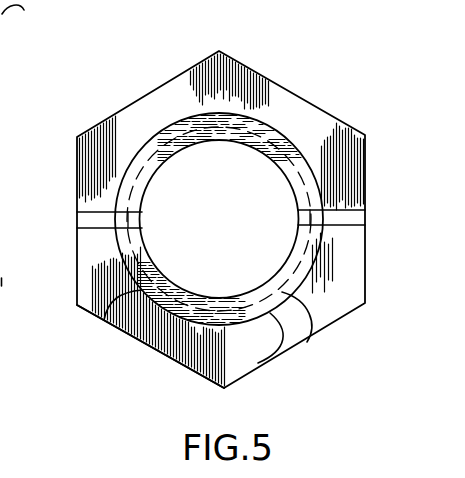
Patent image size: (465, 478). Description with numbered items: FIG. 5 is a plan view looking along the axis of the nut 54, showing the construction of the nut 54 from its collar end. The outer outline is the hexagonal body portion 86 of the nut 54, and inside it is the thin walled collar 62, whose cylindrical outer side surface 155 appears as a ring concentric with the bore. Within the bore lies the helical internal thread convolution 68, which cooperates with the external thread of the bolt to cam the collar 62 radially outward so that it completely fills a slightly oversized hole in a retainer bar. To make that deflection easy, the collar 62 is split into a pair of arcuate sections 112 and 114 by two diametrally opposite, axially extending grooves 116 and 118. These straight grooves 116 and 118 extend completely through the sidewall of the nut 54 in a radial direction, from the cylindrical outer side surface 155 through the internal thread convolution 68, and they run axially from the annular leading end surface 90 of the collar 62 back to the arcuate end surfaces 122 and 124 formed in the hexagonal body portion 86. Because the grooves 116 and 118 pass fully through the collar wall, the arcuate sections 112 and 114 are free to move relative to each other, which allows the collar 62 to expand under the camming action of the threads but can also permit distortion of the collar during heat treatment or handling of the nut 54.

The nut 54 is at (341, 101).
The thin walled collar 62 is at (166, 124).
The arcuate section 112 is at (263, 133).
The helical internal thread convolution 68 is at (174, 140).
The arcuate end surface 122 is at (84, 217).
The arcuate end surface 124 is at (356, 214).
The axially extending groove 116 is at (133, 222).
The axially extending groove 118 is at (300, 214).
The cylindrical outer side surface 155 is at (104, 320).
The hexagonal body portion 86 is at (149, 351).
The leading end surface 90 is at (307, 339).
The arcuate section 114 is at (267, 364).